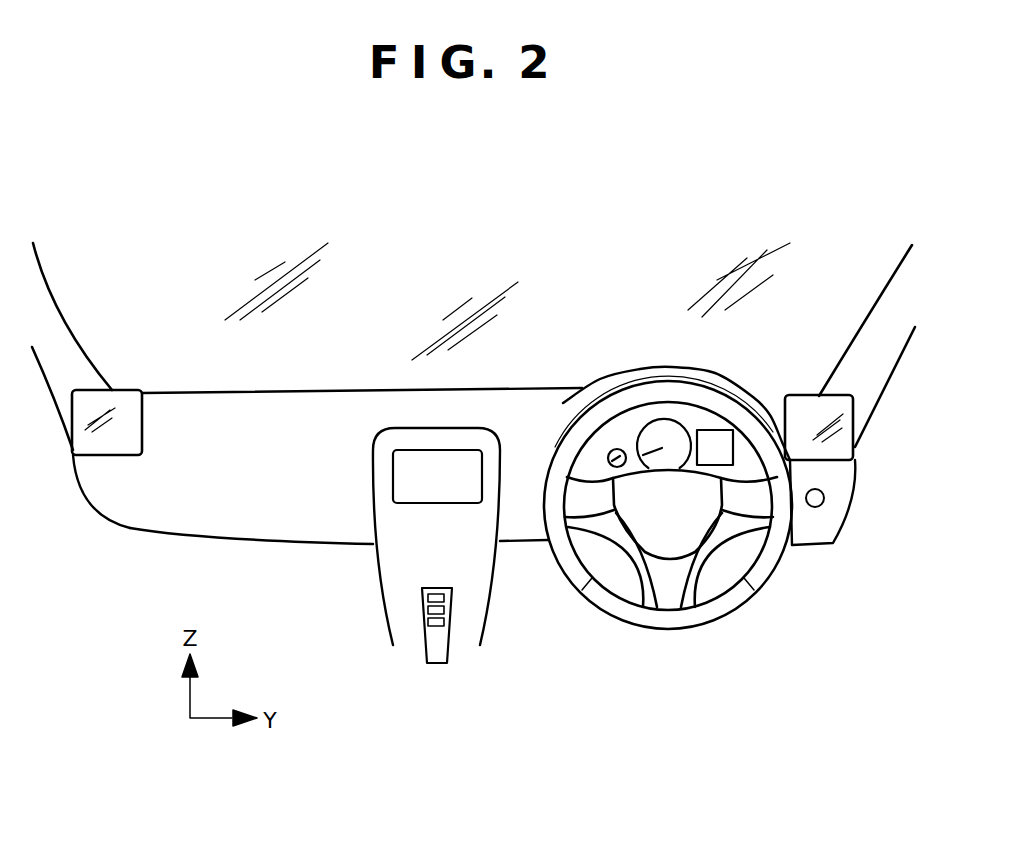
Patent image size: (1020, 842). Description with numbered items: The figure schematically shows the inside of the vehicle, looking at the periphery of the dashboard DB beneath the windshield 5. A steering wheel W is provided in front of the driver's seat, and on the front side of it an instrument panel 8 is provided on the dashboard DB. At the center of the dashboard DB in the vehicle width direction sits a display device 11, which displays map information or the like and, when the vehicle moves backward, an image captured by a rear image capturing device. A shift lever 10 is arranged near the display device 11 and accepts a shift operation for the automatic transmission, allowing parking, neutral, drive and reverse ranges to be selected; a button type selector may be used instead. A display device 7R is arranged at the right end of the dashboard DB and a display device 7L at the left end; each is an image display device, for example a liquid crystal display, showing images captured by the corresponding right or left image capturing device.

The windshield 5 is at (231, 380).
The display device 7L is at (123, 398).
The display device 7R is at (811, 412).
The instrument panel 8 is at (628, 440).
The shift lever 10 is at (448, 647).
The display device 11 is at (393, 480).
The dashboard DB is at (130, 531).
The steering wheel W is at (750, 587).